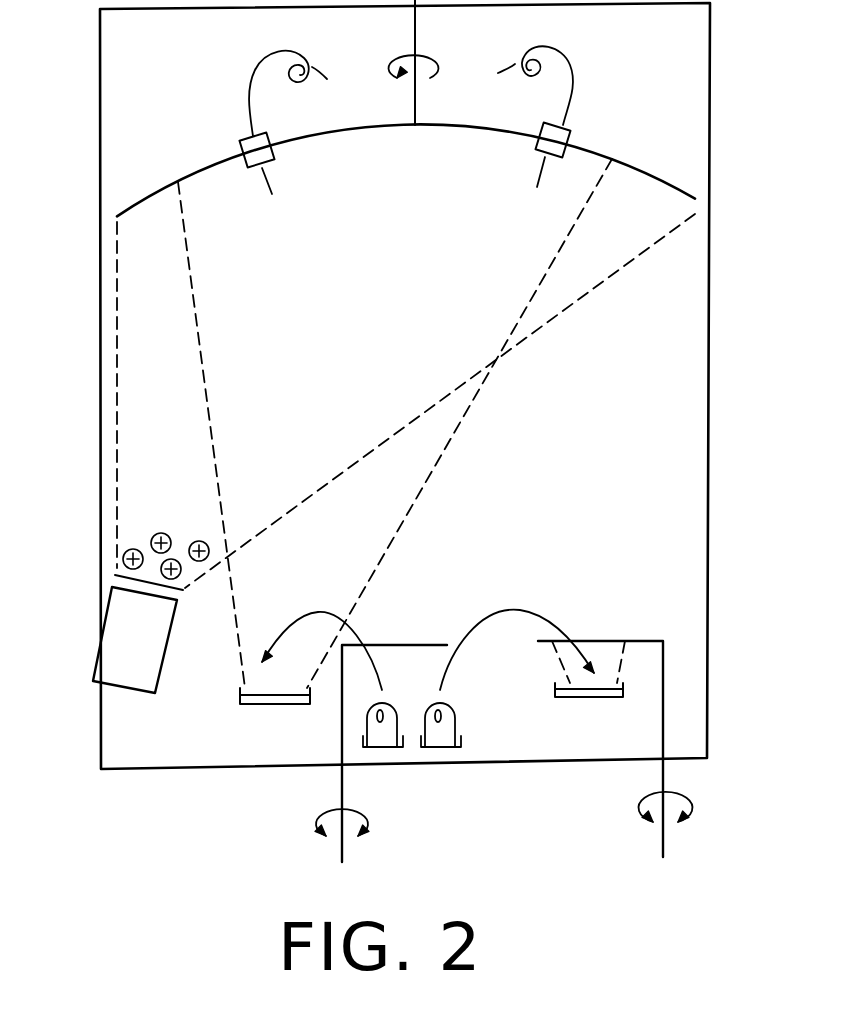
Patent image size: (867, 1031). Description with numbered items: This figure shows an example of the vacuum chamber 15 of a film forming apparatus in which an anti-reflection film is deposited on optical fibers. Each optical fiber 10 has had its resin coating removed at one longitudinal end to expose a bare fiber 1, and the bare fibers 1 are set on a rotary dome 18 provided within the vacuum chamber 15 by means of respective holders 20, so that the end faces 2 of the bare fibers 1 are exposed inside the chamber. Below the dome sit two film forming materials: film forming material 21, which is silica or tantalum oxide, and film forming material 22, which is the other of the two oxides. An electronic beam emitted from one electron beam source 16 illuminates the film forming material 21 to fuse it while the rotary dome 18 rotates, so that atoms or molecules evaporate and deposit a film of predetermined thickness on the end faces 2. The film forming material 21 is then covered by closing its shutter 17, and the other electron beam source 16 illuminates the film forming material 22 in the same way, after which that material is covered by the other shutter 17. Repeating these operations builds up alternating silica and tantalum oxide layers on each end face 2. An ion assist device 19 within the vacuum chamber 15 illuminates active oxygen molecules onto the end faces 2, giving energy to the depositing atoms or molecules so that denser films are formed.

The bare fiber 1 is at (247, 117).
The end face 2 is at (272, 194).
The optical fiber 10 is at (418, 133).
The vacuum chamber 15 is at (101, 328).
The electron beam source 16 is at (382, 747).
The shutter 17 is at (342, 725).
The rotary dome 18 is at (663, 179).
The ion assist device 19 is at (122, 636).
The holder 20 is at (275, 152).
The film forming material 21 is at (262, 700).
The film forming material 22 is at (595, 697).